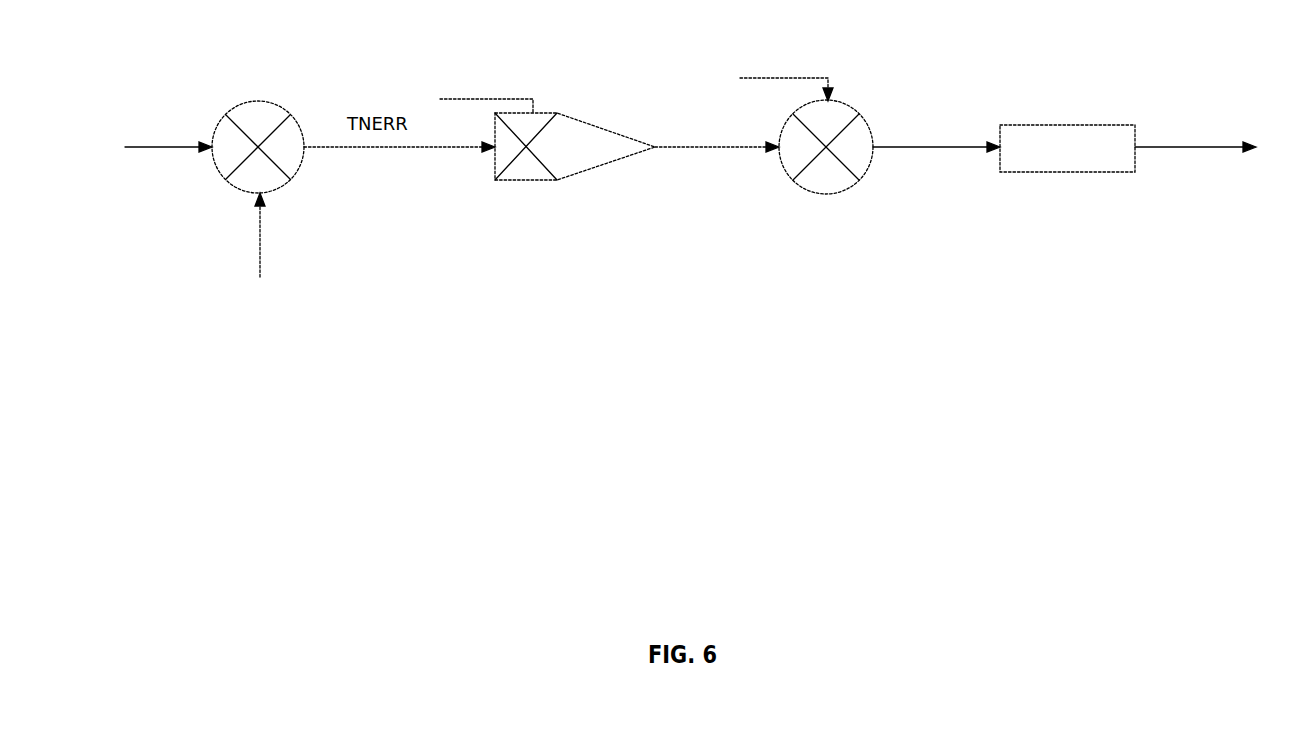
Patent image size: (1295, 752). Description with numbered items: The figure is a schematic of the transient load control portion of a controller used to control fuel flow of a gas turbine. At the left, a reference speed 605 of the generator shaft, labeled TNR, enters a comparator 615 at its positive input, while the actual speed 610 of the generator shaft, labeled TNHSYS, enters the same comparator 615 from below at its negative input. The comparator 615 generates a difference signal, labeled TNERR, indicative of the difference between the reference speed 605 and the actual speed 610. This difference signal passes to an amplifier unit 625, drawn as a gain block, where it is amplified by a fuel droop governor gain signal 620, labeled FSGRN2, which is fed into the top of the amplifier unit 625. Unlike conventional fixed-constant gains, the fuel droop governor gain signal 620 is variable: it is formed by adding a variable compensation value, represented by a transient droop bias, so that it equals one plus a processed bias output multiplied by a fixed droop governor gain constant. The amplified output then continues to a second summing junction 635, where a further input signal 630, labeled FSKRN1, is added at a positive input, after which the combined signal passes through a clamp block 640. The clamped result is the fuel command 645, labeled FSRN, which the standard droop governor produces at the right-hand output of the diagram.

The reference speed 605 is at (163, 105).
The actual speed 610 is at (225, 277).
The comparator 615 is at (283, 102).
The fuel droop governor gain signal 620 is at (517, 73).
The amplifier unit 625 is at (590, 173).
The FSKRN1 input signal 630 is at (740, 40).
The second summation junction 635 is at (850, 190).
The clamp block 640 is at (1065, 122).
The fuel command 645 is at (1205, 112).